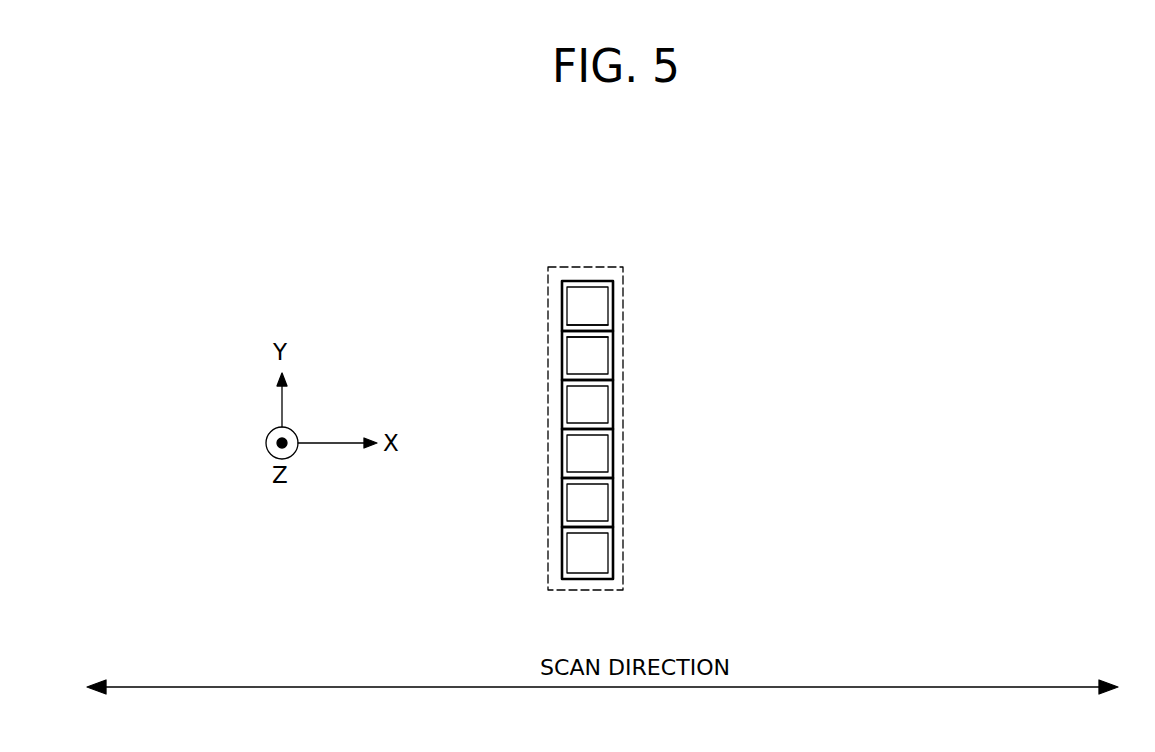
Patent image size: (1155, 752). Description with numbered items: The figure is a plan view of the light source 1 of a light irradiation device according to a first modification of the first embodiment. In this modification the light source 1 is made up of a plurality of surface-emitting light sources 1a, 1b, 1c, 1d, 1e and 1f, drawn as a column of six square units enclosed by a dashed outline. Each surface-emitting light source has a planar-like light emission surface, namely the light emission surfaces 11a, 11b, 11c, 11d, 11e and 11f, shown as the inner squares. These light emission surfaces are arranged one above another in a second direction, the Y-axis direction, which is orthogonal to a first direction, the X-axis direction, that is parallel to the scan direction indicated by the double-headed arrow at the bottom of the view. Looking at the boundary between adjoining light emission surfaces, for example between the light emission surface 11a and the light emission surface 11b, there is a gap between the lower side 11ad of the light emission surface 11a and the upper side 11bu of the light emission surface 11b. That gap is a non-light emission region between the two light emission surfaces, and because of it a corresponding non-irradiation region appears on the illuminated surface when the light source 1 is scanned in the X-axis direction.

The light source 1 is at (565, 267).
The surface-emitting light source 1a is at (613, 283).
The surface-emitting light source 1b is at (613, 336).
The surface-emitting light source 1c is at (613, 387).
The surface-emitting light source 1d is at (613, 438).
The surface-emitting light source 1e is at (613, 488).
The surface-emitting light source 1f is at (613, 537).
The light emission surface 11a is at (599, 316).
The light emission surface 11b is at (599, 365).
The light emission surface 11c is at (599, 412).
The light emission surface 11d is at (599, 462).
The light emission surface 11e is at (599, 513).
The light emission surface 11f is at (599, 563).
The lower side 11ad is at (588, 325).
The upper side 11bu is at (588, 337).